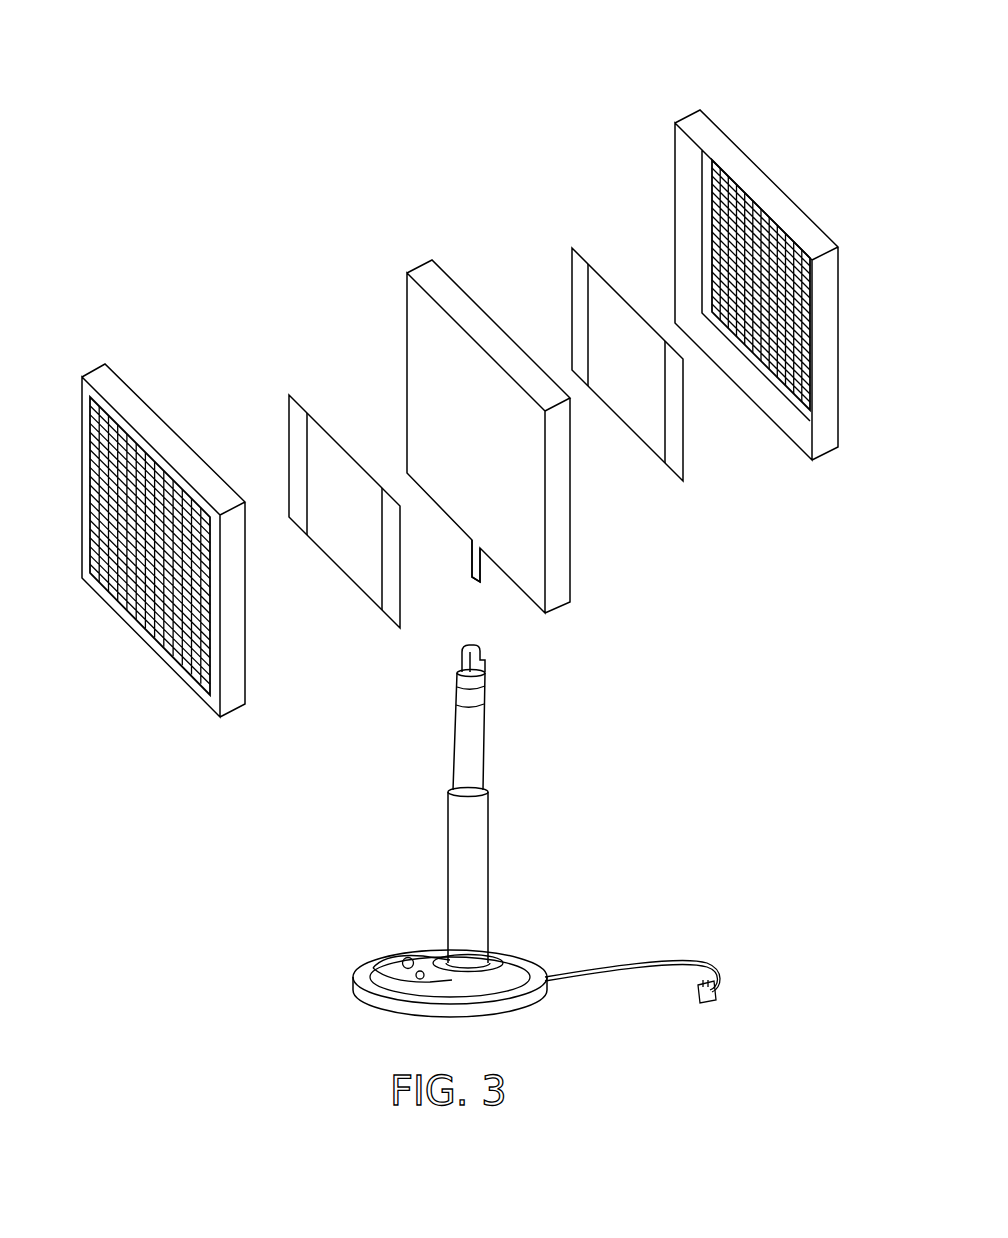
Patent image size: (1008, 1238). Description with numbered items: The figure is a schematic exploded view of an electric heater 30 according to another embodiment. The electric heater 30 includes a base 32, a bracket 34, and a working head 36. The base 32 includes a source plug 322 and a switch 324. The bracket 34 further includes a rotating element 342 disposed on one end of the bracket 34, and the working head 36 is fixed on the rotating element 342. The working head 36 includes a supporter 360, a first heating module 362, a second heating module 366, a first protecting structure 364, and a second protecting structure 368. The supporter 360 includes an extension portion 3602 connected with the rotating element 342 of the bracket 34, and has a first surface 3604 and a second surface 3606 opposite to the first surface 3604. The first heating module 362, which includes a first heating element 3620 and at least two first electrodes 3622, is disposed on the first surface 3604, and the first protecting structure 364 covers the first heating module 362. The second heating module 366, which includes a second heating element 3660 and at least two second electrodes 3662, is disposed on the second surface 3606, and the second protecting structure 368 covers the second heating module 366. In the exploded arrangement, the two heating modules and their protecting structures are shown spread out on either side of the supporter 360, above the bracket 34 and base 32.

The electric heater 30 is at (467, 57).
The base 32 is at (360, 971).
The source plug 322 is at (708, 1003).
The switch 324 is at (410, 958).
The bracket 34 is at (468, 836).
The rotating element 342 is at (478, 664).
The working head 36 is at (644, 134).
The supporter 360 is at (416, 250).
The extension portion 3602 is at (485, 572).
The first surface 3604 is at (530, 500).
The second surface 3606 is at (452, 265).
The first heating module 362 is at (313, 385).
The first heating element 3620 is at (353, 560).
The first electrodes 3622 is at (297, 468).
The first protecting structure 364 is at (120, 375).
The second heating module 366 is at (608, 260).
The second heating element 3660 is at (647, 417).
The second electrodes 3662 is at (583, 288).
The second protecting structure 368 is at (683, 178).